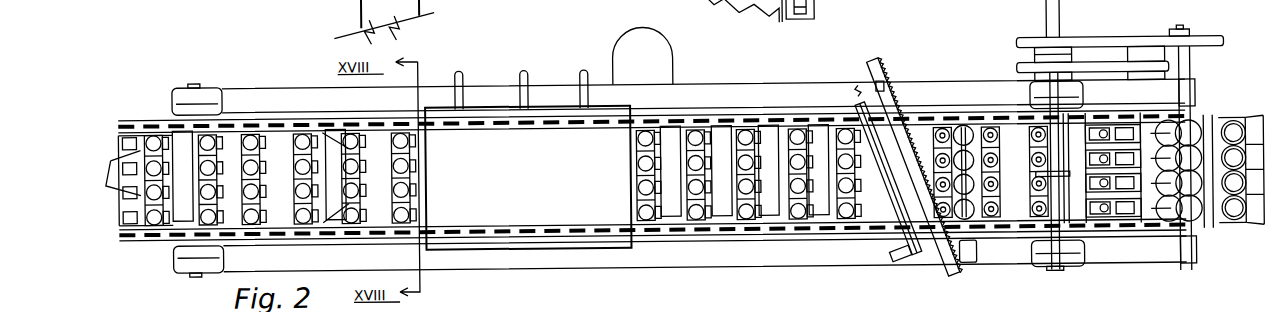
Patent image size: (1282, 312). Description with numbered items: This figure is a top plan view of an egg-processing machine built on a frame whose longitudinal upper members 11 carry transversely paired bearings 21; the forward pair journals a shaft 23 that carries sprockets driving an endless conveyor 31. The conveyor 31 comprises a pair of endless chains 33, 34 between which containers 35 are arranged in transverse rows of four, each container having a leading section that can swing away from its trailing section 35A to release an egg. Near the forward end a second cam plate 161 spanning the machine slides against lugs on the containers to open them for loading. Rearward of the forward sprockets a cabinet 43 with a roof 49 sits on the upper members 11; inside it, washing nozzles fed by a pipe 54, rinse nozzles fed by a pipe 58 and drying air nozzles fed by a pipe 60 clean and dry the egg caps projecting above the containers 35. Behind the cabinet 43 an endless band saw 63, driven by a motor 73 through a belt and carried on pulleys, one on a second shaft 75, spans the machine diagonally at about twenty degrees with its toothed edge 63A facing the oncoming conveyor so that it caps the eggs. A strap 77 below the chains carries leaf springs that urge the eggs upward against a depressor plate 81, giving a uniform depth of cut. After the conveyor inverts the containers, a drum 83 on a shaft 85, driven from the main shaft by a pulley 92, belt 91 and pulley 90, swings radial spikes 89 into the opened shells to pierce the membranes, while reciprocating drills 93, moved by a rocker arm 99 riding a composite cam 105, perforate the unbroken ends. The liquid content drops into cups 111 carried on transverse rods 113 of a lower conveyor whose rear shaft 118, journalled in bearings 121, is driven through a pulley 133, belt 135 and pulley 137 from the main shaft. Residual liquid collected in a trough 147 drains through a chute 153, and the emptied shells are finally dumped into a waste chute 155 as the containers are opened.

The longitudinal upper members 11 is at (265, 89).
The bearings 21 is at (180, 90).
The shaft 23 is at (194, 86).
The endless conveyor 31 is at (322, 112).
The endless chain 33 is at (270, 242).
The endless chain 34 is at (252, 122).
The containers 35 is at (332, 243).
The trailing sections 35A is at (840, 0).
The cabinet 43 is at (524, 182).
The roof 49 is at (517, 253).
The pipe 54 is at (460, 76).
The pipe 58 is at (526, 76).
The pipe 60 is at (584, 76).
The endless band saw 63 is at (865, 64).
The cutting or toothed edge 63A is at (862, 94).
The motor 73 is at (976, 252).
The second shaft 75 is at (884, 92).
The strap 77 is at (888, 178).
The depressor plate 81 is at (894, 198).
The drum 83 is at (1150, 240).
The shaft 85 is at (1138, 128).
The radial spikes 89 is at (1172, 240).
The pulley 90 is at (1155, 80).
The belt 91 is at (1098, 74).
The pulley 92 is at (1028, 72).
The drills 93 is at (974, 112).
The rocker arm 99 is at (1002, 170).
The composite cam 105 is at (1036, 178).
The cups 111 is at (1244, 124).
The transverse rods 113 is at (1208, 230).
The transverse shaft 118 is at (1192, 78).
The bearings 121 is at (1196, 264).
The pulley 133 is at (1190, 40).
The belt 135 is at (1118, 44).
The pulley 137 is at (1046, 36).
The trough 147 is at (778, 136).
The chute 153 is at (668, 52).
The waste chute 155 is at (372, 140).
The second cam plate 161 is at (170, 122).